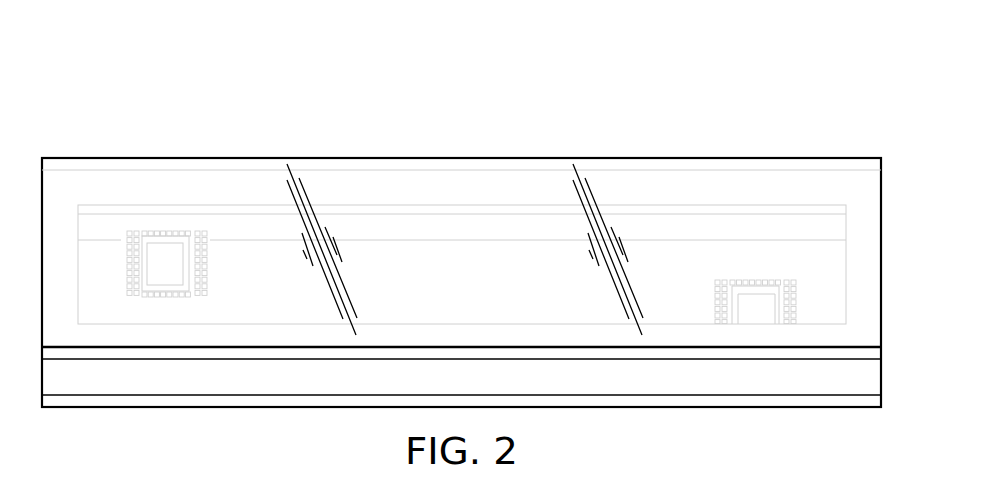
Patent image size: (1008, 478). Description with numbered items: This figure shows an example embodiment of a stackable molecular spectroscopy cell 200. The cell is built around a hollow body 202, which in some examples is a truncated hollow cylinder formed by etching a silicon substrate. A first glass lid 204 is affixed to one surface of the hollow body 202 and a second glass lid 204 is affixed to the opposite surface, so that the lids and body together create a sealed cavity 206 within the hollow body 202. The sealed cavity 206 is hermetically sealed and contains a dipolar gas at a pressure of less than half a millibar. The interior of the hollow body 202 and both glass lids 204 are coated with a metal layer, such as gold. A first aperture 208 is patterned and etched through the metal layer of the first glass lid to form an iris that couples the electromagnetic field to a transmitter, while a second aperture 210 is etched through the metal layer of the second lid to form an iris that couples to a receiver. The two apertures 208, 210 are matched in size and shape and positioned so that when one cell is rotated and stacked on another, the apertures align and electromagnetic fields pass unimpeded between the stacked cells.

The stackable molecular spectroscopy cell 200 is at (399, 107).
The hollow body 202 is at (167, 385).
The glass lid 204 is at (234, 166).
The sealed cavity 206 is at (505, 253).
The first aperture 208 is at (175, 284).
The second aperture 210 is at (738, 303).